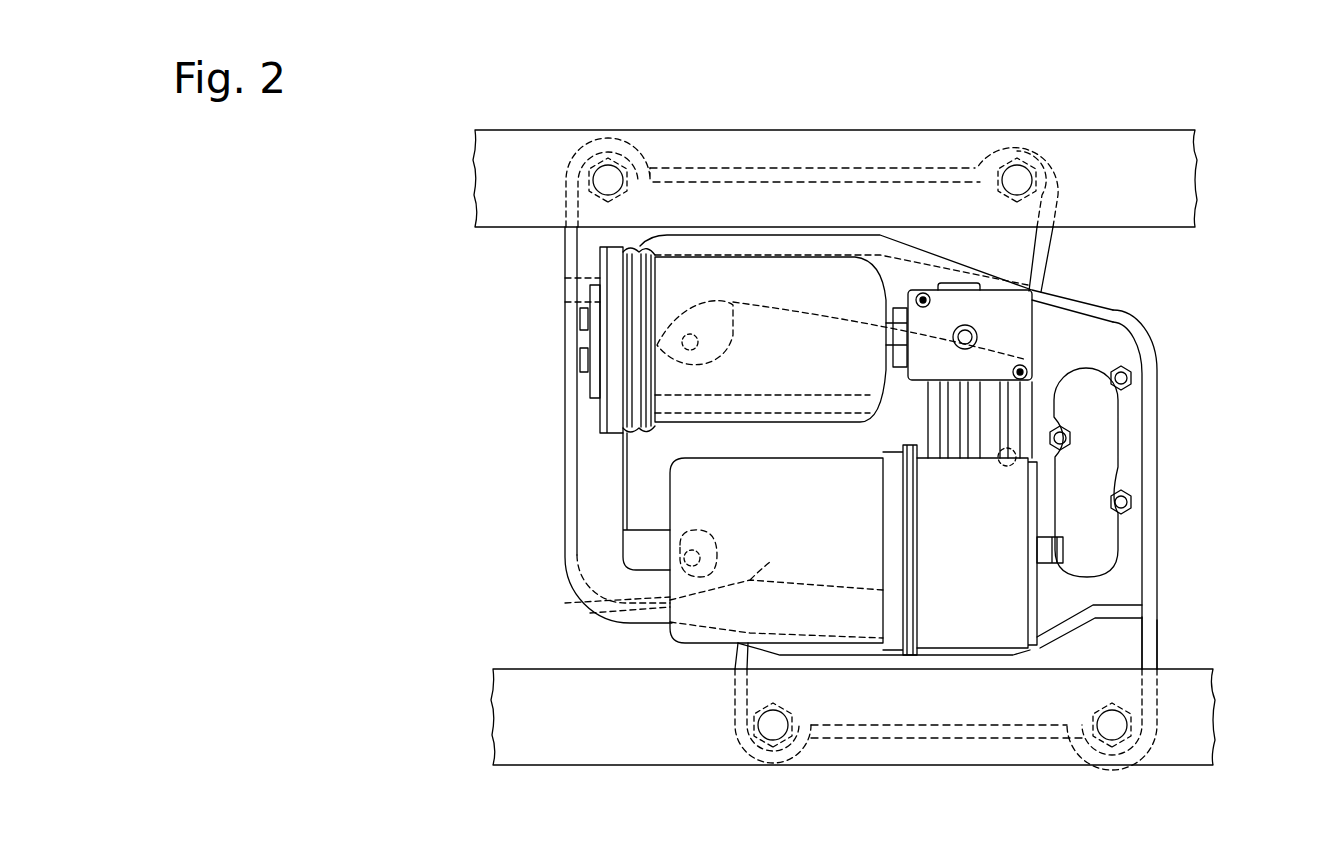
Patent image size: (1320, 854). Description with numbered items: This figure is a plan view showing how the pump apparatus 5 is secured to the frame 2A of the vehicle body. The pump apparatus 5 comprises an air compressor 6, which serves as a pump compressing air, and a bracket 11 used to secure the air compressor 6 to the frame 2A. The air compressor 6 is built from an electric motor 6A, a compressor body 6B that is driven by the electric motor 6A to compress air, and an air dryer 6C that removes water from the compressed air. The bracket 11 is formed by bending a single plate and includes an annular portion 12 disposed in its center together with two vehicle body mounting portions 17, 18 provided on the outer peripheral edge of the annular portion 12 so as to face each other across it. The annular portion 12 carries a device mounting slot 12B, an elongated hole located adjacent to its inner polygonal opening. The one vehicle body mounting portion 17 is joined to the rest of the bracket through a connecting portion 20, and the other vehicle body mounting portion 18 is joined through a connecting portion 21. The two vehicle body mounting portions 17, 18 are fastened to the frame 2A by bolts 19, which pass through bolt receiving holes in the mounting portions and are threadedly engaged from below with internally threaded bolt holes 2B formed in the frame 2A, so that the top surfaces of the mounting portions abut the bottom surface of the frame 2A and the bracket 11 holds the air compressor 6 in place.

The frame 2A is at (1153, 181).
The bolt holes 2B is at (620, 163).
The pump apparatus 5 is at (565, 420).
The air compressor 6 is at (670, 502).
The electric motor 6A is at (770, 565).
The compressor body 6B is at (988, 522).
The air dryer 6C is at (680, 293).
The bracket 11 is at (1158, 393).
The annular portion 12 is at (1103, 350).
The device mounting slot 12B is at (1113, 465).
The vehicle body mounting portion 17 is at (1105, 648).
The vehicle body mounting portion 18 is at (1023, 247).
The bolts 19 is at (607, 178).
The connecting portion 20 is at (1087, 613).
The connecting portion 21 is at (840, 237).